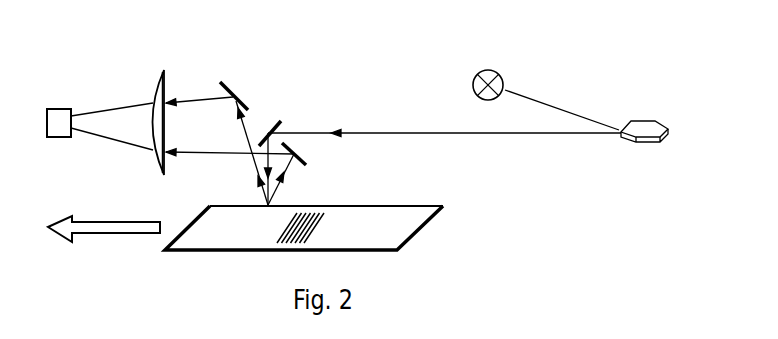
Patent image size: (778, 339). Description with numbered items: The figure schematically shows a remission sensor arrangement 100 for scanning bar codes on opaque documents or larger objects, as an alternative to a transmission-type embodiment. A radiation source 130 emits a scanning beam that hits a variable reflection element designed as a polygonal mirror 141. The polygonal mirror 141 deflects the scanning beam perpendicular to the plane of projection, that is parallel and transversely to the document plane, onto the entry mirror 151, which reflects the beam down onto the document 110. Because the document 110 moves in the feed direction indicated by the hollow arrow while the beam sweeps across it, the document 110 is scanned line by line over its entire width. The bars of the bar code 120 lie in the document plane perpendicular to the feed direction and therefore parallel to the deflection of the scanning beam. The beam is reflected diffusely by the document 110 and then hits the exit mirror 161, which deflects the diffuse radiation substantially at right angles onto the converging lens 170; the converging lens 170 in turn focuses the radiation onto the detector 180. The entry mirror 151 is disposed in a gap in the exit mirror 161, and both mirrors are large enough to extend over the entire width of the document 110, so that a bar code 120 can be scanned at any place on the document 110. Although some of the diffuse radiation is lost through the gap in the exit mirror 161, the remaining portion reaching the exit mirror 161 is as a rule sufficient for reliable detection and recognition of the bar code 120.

The optical inspection system 100 is at (99, 54).
The document 110 is at (447, 203).
The bar code 120 is at (318, 229).
The radiation source 130 is at (490, 70).
The polygonal mirror 141 is at (640, 118).
The entry mirror 151 is at (282, 118).
The exit mirror 161 is at (232, 86).
The converging lens 170 is at (157, 170).
The detector 180 is at (53, 143).